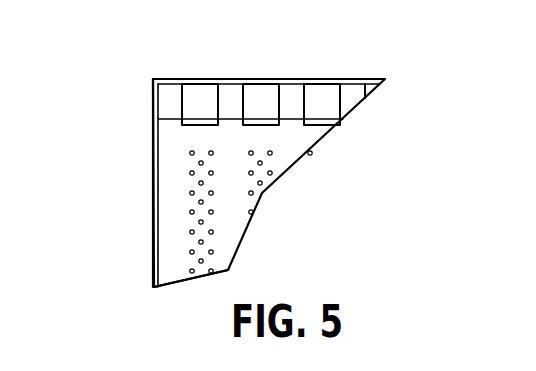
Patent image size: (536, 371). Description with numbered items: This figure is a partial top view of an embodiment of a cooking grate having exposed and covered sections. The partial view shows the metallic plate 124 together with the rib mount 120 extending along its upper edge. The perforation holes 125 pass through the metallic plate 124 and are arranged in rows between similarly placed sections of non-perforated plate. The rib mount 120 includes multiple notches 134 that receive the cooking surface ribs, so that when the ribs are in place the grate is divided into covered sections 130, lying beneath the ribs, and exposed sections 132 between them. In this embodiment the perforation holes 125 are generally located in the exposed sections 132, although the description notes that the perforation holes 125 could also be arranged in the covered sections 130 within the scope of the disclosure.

The rib mount 120 is at (322, 98).
The metallic plate 124 is at (320, 135).
The perforation holes 125 is at (192, 173).
The covered sections 130 is at (175, 145).
The exposed sections 132 is at (200, 262).
The notches 134 is at (232, 100).